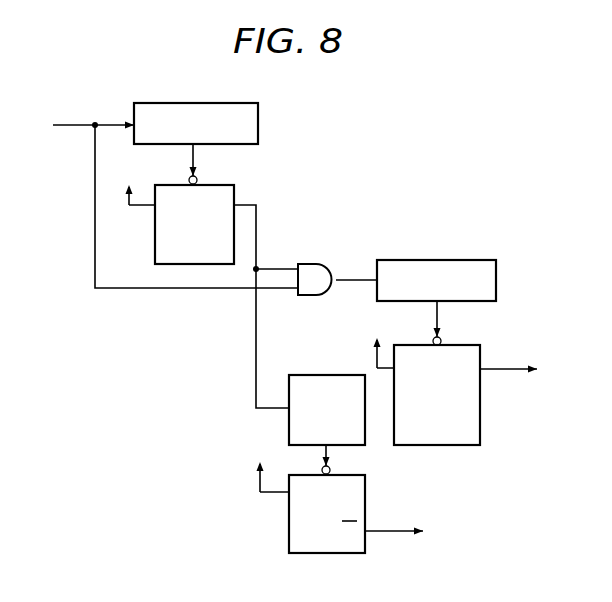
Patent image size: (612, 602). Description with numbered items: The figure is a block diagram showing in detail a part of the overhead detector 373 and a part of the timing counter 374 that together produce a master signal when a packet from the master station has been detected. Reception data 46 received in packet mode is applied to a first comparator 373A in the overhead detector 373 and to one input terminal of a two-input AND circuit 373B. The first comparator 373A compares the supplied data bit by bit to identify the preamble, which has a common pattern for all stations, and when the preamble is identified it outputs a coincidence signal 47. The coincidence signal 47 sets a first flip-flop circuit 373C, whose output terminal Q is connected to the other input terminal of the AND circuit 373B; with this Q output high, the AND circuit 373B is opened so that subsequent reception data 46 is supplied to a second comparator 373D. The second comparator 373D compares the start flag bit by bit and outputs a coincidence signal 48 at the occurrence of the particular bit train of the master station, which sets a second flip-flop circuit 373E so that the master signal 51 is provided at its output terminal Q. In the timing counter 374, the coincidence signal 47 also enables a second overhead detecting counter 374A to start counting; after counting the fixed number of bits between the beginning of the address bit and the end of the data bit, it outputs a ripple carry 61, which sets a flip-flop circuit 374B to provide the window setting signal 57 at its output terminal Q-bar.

The reception data 46 is at (72, 124).
The coincidence signal 47 is at (195, 157).
The coincidence signal 48 is at (439, 313).
The master signal 51 is at (503, 368).
The window setting signal 57 is at (378, 528).
The ripple carry 61 is at (328, 450).
The overhead detector 373 is at (320, 143).
The first comparator 373A is at (203, 103).
The 2-input AND circuit 373B is at (317, 263).
The first flip-flop circuit 373C is at (155, 223).
The second comparator 373D is at (437, 260).
The second flip-flop circuit 373E is at (482, 411).
The timing counter 374 is at (216, 452).
The second overhead detecting counter 374A is at (327, 375).
The flip-flop circuit 374B is at (367, 490).